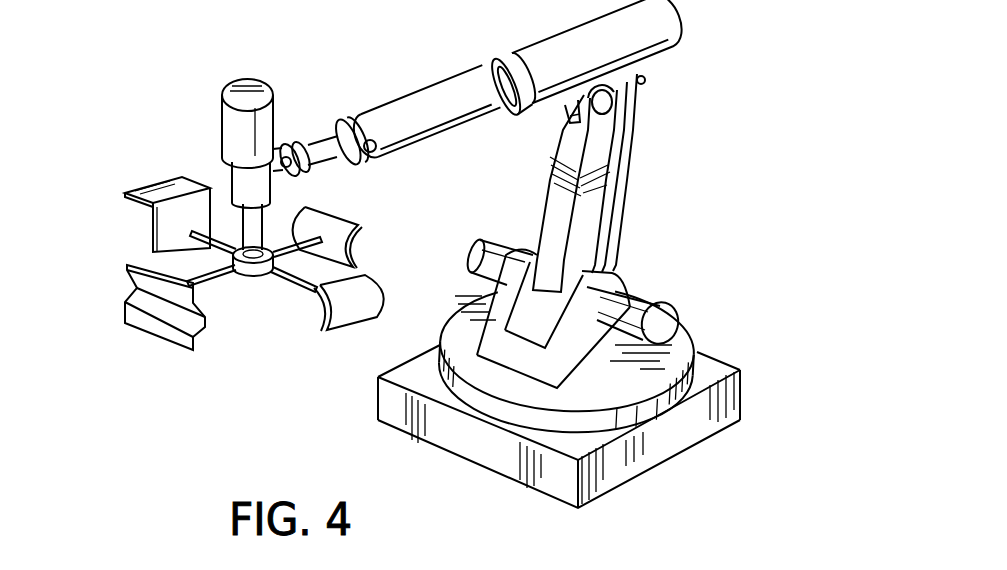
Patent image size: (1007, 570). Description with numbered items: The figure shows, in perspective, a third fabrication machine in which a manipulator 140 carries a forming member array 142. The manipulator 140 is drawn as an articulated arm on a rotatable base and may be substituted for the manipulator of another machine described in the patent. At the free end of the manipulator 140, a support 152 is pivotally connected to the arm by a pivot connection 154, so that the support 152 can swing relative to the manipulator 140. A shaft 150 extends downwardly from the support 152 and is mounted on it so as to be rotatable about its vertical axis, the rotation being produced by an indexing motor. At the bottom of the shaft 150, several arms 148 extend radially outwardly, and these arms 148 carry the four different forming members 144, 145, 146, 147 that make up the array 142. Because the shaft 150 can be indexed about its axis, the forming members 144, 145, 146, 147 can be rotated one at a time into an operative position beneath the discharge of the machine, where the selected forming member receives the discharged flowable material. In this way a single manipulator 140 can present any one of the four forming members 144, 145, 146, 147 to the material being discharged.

The manipulator 140 is at (665, 158).
The forming member array 142 is at (248, 352).
The forming member 144 is at (150, 327).
The forming member 145 is at (345, 312).
The forming member 146 is at (346, 238).
The forming member 147 is at (168, 217).
The arms 148 is at (290, 280).
The shaft 150 is at (258, 216).
The support 152 is at (306, 136).
The pivot connection 154 is at (377, 152).